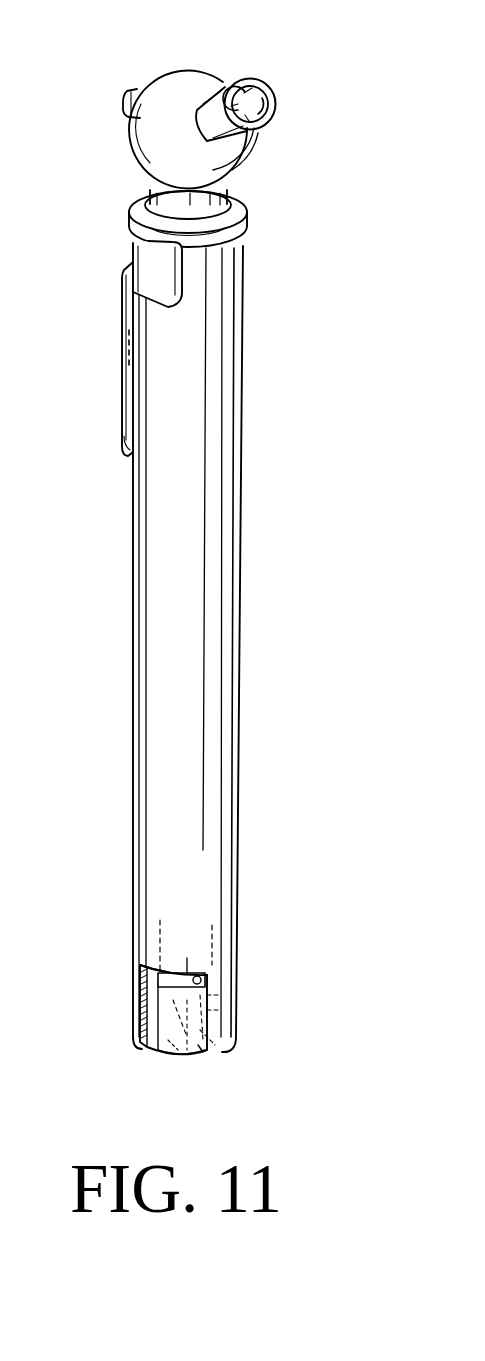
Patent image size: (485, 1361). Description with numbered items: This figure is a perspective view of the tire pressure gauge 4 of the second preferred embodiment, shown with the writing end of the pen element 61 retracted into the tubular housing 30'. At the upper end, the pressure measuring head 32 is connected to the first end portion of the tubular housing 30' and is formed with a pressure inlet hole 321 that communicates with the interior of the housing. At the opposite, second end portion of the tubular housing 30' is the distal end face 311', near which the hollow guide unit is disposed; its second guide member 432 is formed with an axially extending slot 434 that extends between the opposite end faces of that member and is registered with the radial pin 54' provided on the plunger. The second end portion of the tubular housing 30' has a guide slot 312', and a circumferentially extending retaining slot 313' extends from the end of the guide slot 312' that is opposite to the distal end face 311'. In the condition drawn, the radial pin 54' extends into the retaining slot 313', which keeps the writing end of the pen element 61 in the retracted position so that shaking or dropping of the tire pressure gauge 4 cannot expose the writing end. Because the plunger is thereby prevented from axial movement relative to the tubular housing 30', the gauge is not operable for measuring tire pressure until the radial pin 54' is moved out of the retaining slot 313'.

The tire pressure gauge 4 is at (288, 490).
The pressure measuring head 32 is at (169, 88).
The pressure inlet hole 321 is at (270, 108).
The tubular housing 30' is at (147, 646).
The retaining slot 313' is at (126, 925).
The guide slot 312' is at (125, 1009).
The radial pin 54' is at (233, 983).
The second guide member 432 is at (220, 1015).
The axially extending slot 434 is at (215, 1055).
The distal end face 311' is at (258, 1091).
The pen element 61 is at (172, 1051).